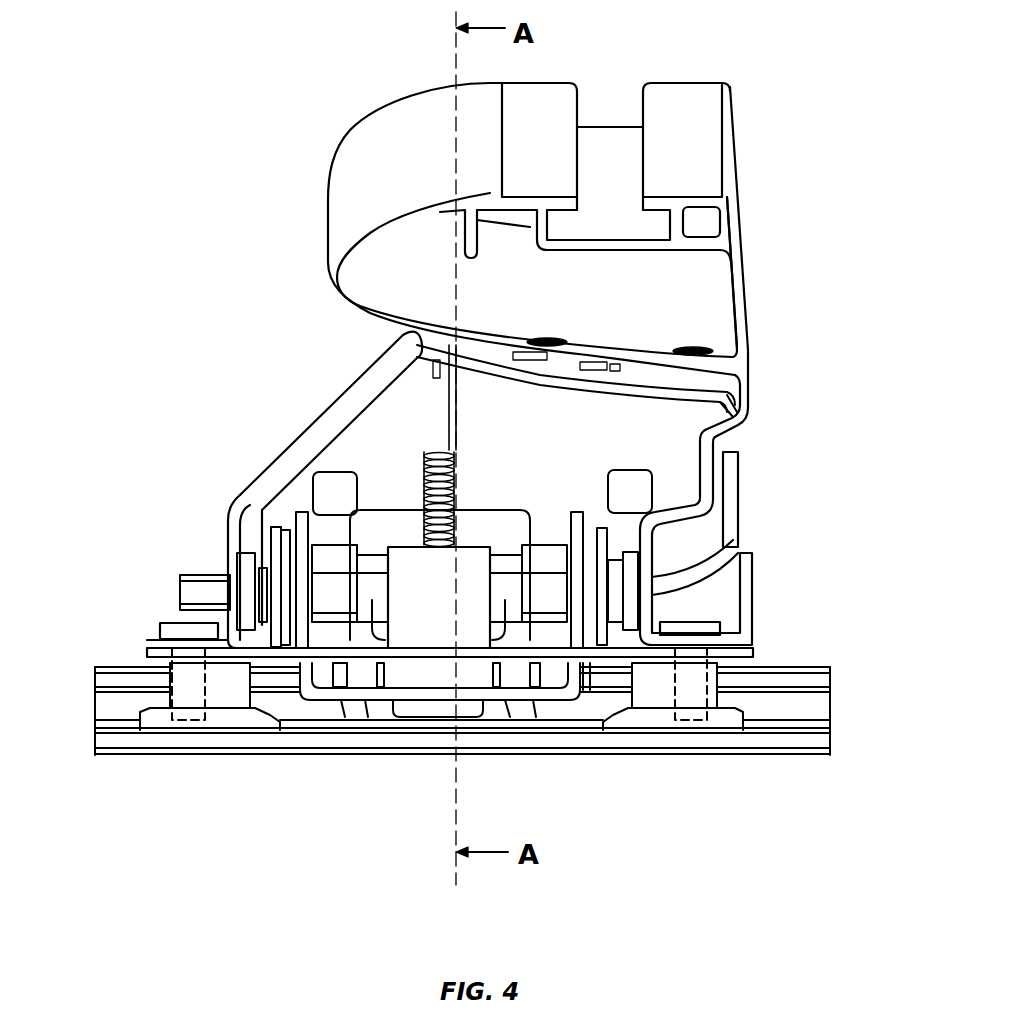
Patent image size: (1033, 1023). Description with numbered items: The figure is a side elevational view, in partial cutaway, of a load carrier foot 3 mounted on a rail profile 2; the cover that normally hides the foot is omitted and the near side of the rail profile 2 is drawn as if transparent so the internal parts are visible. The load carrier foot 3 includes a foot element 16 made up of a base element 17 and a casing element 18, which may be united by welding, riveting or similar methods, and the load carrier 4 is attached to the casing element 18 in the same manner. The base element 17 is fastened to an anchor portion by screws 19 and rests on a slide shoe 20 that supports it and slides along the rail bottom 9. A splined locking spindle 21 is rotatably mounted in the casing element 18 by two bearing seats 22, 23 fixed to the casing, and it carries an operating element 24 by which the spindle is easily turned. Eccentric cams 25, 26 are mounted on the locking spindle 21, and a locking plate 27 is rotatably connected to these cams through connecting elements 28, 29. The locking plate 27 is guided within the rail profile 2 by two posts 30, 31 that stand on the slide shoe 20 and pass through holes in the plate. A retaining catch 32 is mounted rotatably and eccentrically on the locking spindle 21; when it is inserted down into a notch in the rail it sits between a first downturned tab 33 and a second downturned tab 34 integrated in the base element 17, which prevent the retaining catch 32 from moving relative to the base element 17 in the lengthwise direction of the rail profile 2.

The rail profile 2 is at (777, 735).
The load carrier foot 3 is at (790, 182).
The load carrier 4 is at (702, 145).
The rail bottom 9 is at (95, 727).
The foot element 16 is at (300, 338).
The base element 17 is at (150, 655).
The casing element 18 is at (375, 350).
The screws 19 is at (180, 728).
The slide shoe 20 is at (245, 728).
The locking spindle 21 is at (188, 592).
The bearing seat 22 is at (249, 582).
The bearing seat 23 is at (630, 570).
The operating element 24 is at (732, 503).
The eccentric cam 25 is at (266, 557).
The eccentric cam 26 is at (612, 552).
The locking plate 27 is at (435, 700).
The connecting element 28 is at (292, 702).
The connecting element 29 is at (581, 697).
The post 30 is at (533, 710).
The post 31 is at (343, 714).
The retaining catch 32 is at (470, 570).
The first downturned tab 33 is at (372, 692).
The second downturned tab 34 is at (506, 692).